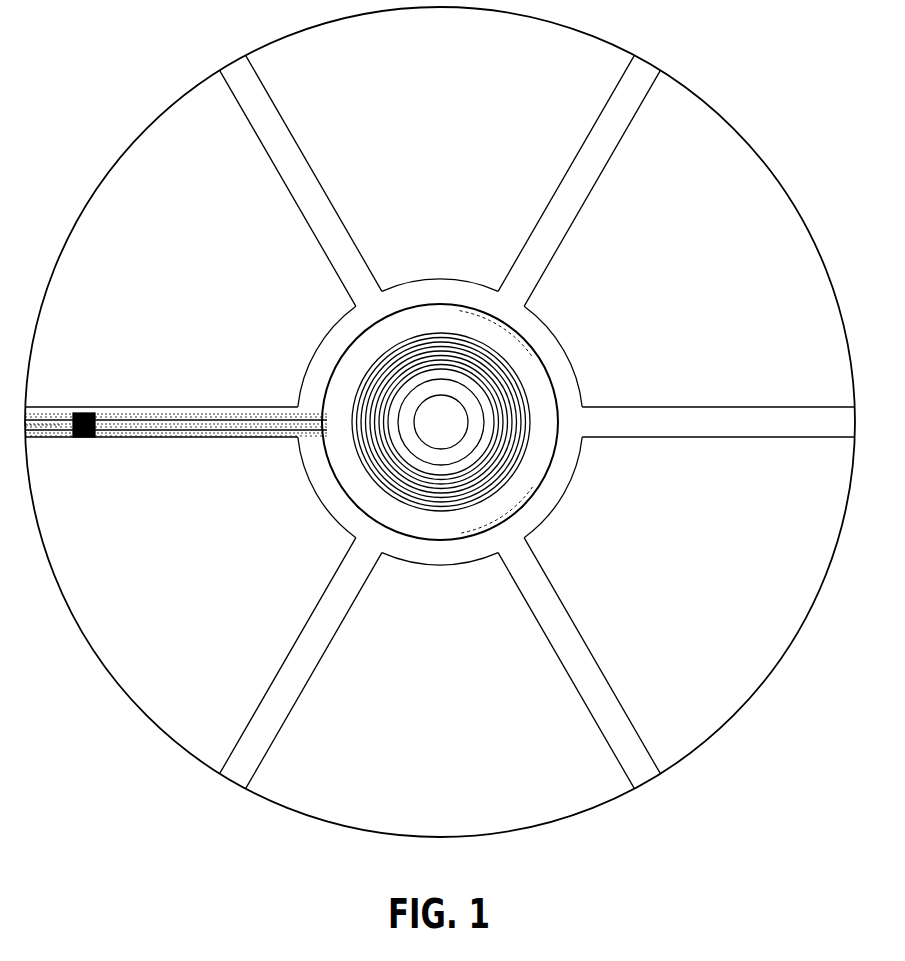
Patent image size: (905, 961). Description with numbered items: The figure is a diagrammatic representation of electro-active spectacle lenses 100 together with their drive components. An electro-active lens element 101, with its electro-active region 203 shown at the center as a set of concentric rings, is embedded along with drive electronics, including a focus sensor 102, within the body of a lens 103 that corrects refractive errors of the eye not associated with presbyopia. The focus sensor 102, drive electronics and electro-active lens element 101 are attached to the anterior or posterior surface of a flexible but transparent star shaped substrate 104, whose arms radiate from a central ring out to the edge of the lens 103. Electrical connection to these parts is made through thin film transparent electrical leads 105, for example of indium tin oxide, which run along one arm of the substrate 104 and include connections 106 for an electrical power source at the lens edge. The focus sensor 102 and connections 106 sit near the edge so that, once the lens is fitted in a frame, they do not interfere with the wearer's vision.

The electro-active spectacle lenses 100 is at (80, 63).
The electro-active lens element 101 is at (538, 393).
The focus sensor 102 is at (93, 413).
The lens 103 is at (730, 123).
The star shaped substrate 104 is at (435, 293).
The thin film transparent electrical leads 105 is at (192, 420).
The connections for an electrical power source 106 is at (40, 430).
The electro-active region 203 is at (515, 458).